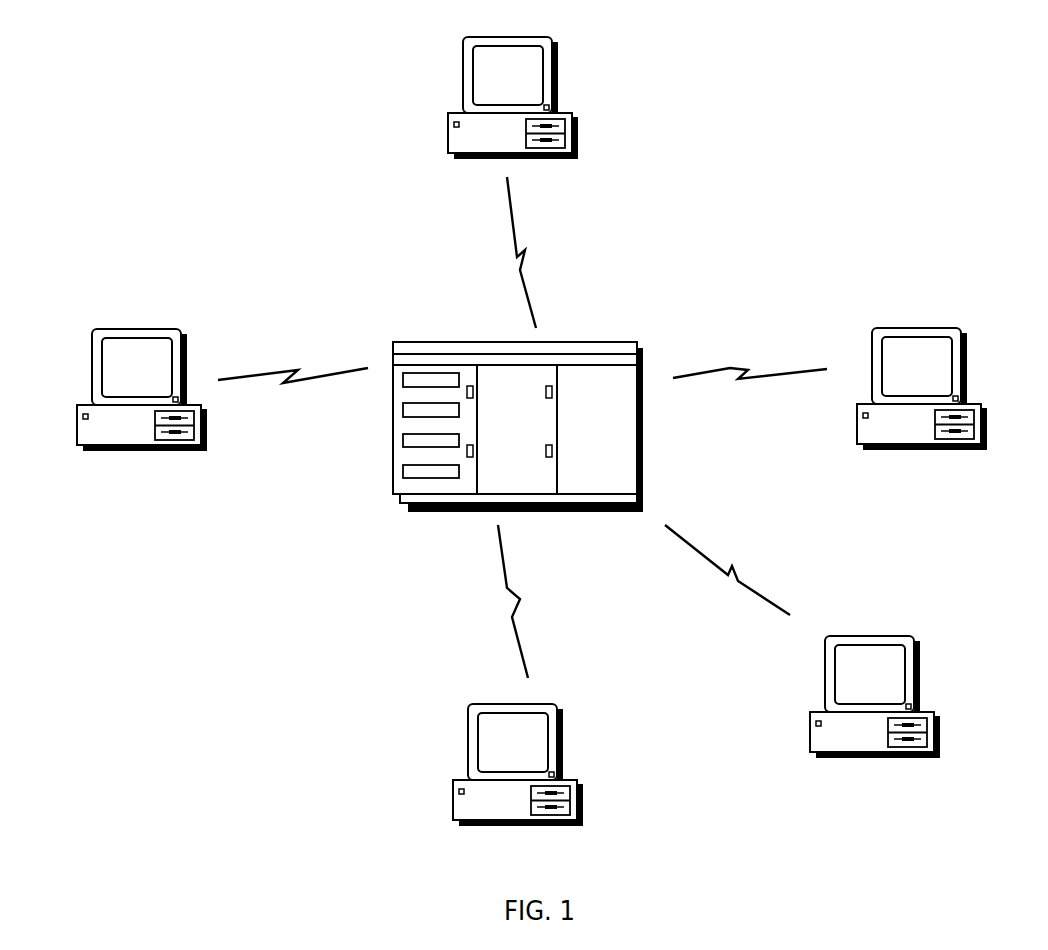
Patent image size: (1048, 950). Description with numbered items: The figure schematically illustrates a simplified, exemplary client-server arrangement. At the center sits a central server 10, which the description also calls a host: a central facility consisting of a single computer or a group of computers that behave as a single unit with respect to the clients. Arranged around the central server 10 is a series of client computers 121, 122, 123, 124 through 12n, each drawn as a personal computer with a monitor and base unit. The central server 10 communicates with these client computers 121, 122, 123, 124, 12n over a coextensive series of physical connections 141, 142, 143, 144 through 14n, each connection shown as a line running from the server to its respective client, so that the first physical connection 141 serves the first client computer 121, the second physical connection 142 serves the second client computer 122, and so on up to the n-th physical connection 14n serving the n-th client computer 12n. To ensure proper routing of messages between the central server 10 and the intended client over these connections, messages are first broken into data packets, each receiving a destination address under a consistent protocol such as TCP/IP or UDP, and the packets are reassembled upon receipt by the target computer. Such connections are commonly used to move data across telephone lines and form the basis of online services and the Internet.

The central server 10 is at (458, 342).
The client computer 121 is at (453, 803).
The client computer 122 is at (125, 332).
The client computer 123 is at (577, 130).
The client computer 124 is at (938, 450).
The client computer 12n is at (934, 727).
The physical connection 141 is at (505, 582).
The physical connection 142 is at (300, 380).
The physical connection 143 is at (515, 230).
The physical connection 144 is at (733, 368).
The physical connection 14n is at (772, 598).